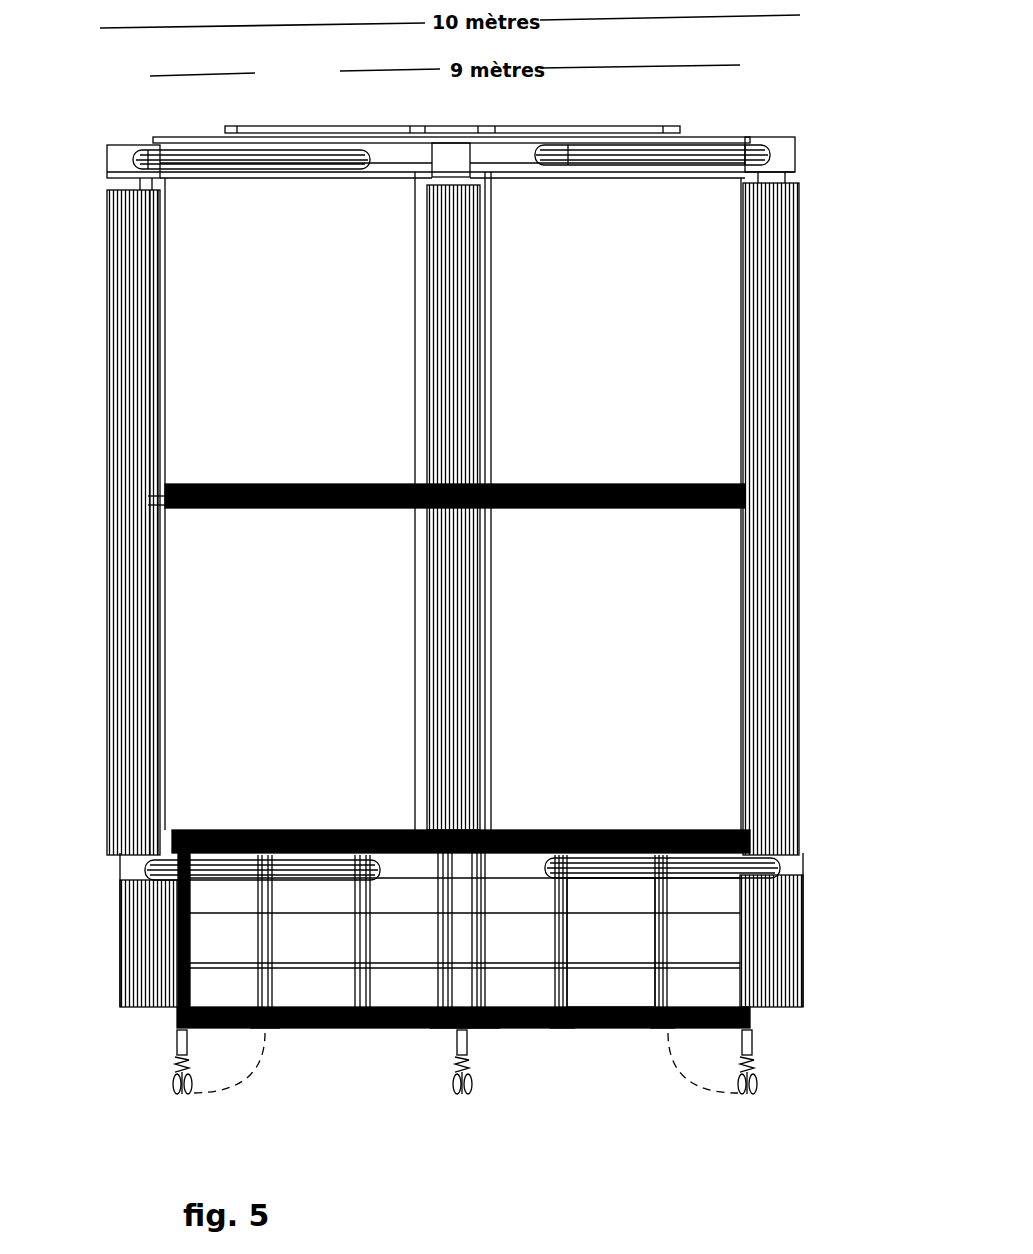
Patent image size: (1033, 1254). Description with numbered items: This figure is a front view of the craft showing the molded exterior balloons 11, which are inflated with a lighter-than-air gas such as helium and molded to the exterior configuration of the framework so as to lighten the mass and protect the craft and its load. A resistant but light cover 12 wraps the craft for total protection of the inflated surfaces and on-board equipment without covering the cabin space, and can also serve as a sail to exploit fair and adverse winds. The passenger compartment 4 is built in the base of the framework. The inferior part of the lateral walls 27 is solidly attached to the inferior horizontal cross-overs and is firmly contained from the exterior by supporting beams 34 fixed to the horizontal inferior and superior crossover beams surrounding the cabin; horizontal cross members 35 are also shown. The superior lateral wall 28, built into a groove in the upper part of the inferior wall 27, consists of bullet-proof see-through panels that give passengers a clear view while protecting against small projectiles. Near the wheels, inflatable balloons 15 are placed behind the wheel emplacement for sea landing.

The passenger compartment 4 is at (463, 1064).
The molded balloons 11 is at (405, 598).
The cover 12 is at (423, 360).
The inflatable balloons 15 is at (235, 1063).
The inferior part of the lateral walls 27 is at (715, 978).
The superior lateral wall 28 is at (615, 918).
The supporting beams 34 is at (357, 915).
The horizontal cross members 35 is at (235, 964).